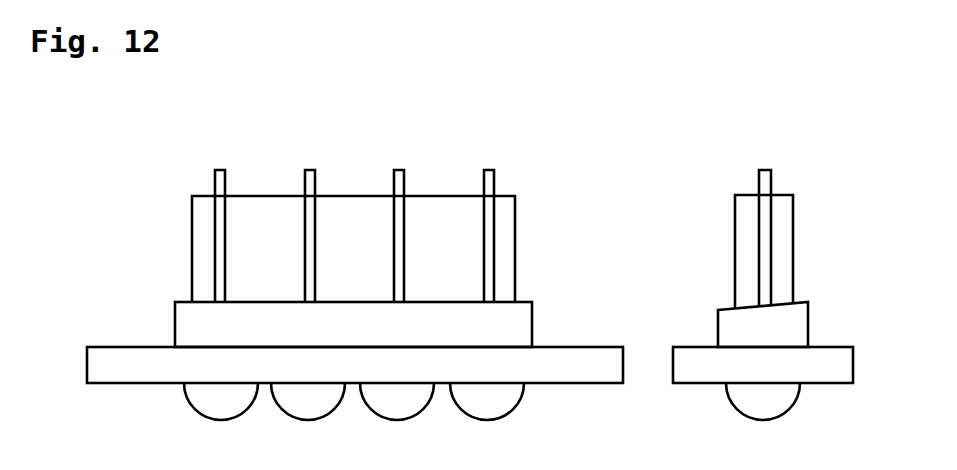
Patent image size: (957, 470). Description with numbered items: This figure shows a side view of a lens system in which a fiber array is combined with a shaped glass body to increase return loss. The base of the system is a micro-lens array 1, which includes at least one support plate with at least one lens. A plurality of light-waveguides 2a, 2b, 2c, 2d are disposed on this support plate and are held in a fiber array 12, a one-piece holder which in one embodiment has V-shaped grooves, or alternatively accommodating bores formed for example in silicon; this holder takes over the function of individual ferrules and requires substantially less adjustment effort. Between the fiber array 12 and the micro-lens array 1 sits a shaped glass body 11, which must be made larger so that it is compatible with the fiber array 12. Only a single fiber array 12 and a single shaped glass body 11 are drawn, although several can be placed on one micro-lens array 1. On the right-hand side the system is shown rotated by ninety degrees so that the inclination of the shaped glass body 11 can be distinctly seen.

The micro-lens array 1 is at (140, 363).
The shaped glass body 11 is at (185, 338).
The fiber array 12 is at (203, 260).
The light-waveguide 2a is at (222, 168).
The light-waveguide 2b is at (310, 168).
The light-waveguide 2c is at (400, 168).
The light-waveguide 2d is at (490, 168).